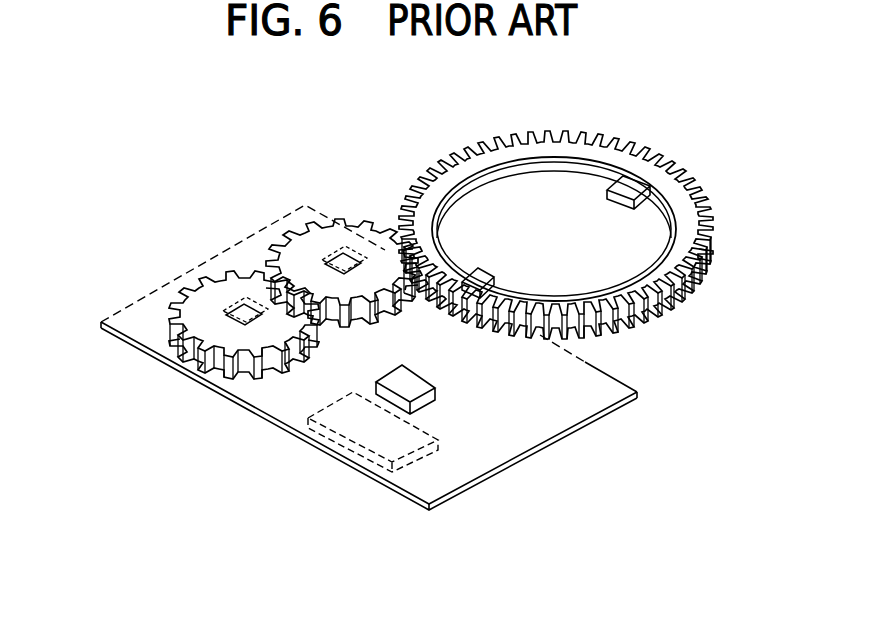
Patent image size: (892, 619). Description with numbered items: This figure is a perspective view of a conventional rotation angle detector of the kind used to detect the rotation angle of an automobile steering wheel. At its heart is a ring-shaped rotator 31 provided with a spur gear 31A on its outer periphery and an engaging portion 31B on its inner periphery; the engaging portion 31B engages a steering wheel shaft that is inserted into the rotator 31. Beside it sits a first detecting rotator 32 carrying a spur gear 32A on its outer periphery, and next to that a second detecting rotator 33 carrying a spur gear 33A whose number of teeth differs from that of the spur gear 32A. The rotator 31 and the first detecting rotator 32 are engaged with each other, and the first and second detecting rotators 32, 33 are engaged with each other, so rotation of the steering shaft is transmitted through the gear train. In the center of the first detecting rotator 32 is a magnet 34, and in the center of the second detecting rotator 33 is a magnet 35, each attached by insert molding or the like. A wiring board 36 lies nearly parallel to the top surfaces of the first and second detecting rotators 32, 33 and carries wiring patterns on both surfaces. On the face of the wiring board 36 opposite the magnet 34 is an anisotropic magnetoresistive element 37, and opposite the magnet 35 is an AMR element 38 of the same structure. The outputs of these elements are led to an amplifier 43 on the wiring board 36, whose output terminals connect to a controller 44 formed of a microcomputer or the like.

The rotator 31 is at (675, 150).
The spur gear 31A is at (705, 259).
The engaging portion 31B is at (630, 183).
The first detecting rotator 32 is at (365, 212).
The spur gear 32A is at (348, 218).
The second detecting rotator 33 is at (190, 282).
The spur gear 33A is at (170, 307).
The magnet 34 is at (323, 269).
The magnet 35 is at (240, 322).
The wiring board 36 is at (590, 417).
The anisotropic magnetoresistive element 37 is at (340, 252).
The anisotropic magnetoresistive element 38 is at (223, 307).
The amplifier 43 is at (418, 388).
The controller 44 is at (358, 422).